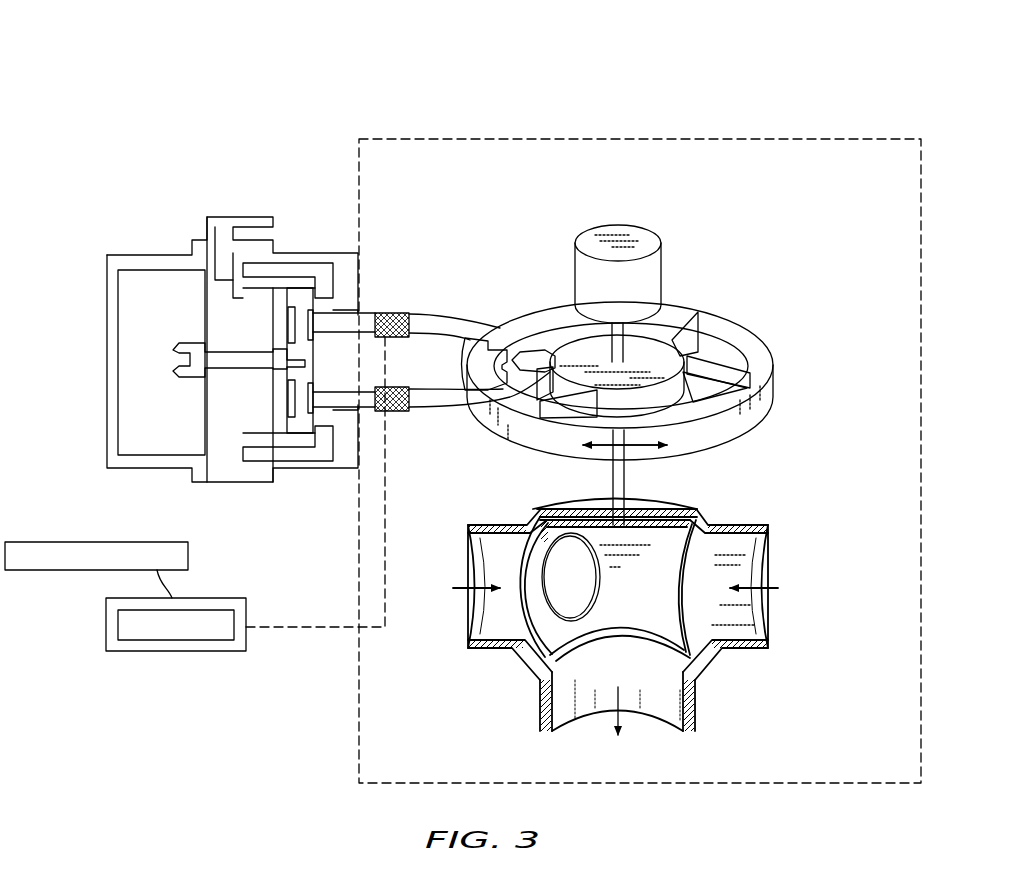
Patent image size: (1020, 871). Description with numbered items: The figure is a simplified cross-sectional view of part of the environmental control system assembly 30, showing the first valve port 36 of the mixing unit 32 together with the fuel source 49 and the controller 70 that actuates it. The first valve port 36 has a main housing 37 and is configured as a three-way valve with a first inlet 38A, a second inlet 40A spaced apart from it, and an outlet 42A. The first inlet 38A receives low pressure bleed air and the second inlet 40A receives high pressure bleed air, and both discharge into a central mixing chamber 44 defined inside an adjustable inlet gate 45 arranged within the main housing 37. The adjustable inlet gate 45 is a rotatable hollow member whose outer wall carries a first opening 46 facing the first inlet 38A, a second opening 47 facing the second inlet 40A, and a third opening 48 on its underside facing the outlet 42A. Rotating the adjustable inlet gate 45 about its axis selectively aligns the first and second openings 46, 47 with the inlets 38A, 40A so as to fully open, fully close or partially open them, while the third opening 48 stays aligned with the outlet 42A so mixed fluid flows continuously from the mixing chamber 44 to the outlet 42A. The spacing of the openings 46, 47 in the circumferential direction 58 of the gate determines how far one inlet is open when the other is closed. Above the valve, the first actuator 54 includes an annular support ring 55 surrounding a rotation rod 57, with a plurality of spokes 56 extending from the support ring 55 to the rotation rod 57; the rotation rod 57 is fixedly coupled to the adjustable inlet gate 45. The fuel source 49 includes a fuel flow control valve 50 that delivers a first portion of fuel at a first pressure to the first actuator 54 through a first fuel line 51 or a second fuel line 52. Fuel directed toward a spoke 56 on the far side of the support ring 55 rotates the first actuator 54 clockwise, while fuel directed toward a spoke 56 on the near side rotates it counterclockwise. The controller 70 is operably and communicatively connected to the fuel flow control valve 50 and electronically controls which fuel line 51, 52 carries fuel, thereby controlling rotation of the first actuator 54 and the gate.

The environmental control system assembly 30 is at (215, 99).
The mixing unit 32 is at (758, 136).
The first valve port 36 is at (790, 656).
The main housing 37 is at (770, 527).
The first inlet 38A is at (526, 648).
The second inlet 40A is at (768, 646).
The outlet 42A is at (692, 722).
The central mixing chamber 44 is at (664, 556).
The adjustable inlet gate 45 is at (528, 660).
The first opening 46 is at (567, 578).
The second opening 47 is at (694, 578).
The third opening 48 is at (640, 655).
The fuel source 49 is at (138, 255).
The fuel flow control valve 50 is at (349, 285).
The first fuel line 51 is at (418, 313).
The second fuel line 52 is at (422, 412).
The first actuator 54 is at (697, 273).
The annular support ring 55 is at (768, 406).
The spokes 56 is at (690, 330).
The rotation rod 57 is at (645, 498).
The circumferential direction 58 is at (622, 445).
The controller 70 is at (62, 542).